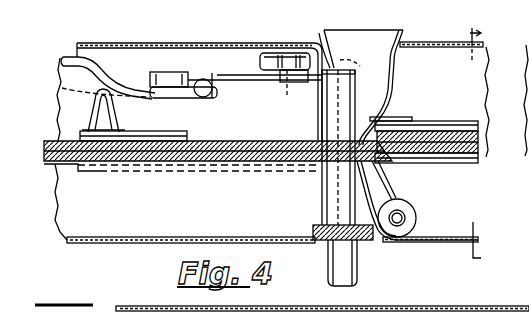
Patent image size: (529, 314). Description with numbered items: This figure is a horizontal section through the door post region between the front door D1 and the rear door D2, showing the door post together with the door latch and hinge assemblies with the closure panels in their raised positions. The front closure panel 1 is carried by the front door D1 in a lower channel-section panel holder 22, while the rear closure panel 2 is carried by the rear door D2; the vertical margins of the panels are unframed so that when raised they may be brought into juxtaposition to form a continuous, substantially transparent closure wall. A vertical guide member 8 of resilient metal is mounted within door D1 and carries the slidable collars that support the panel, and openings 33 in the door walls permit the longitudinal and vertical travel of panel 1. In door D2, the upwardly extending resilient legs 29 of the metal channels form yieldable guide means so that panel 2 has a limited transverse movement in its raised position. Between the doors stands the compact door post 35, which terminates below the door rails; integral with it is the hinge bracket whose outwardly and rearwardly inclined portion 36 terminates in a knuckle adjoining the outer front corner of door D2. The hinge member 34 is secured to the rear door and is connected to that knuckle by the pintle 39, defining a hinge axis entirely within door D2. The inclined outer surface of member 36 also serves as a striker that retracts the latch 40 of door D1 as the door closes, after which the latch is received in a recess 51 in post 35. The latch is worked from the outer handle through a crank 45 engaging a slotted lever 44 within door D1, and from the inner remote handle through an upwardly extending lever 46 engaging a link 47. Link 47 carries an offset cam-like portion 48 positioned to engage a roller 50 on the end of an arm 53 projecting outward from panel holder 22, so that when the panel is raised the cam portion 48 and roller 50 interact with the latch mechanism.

The closure panel 1 is at (265, 141).
The closure panel 2 is at (450, 130).
The vertical guide member 8 is at (485, 141).
The panel holder 22 is at (178, 131).
The channel leg 29 is at (385, 118).
The opening 33 is at (384, 97).
The hinge member 34 is at (417, 219).
The door post 35 is at (358, 158).
The inclined portion 36 is at (387, 193).
The pintle 39 is at (407, 212).
The latch 40 is at (330, 44).
The slotted lever 44 is at (262, 63).
The crank 45 is at (287, 82).
The lever 46 is at (188, 73).
The link 47 is at (173, 97).
The cam-like portion 48 is at (73, 68).
The roller 50 is at (94, 104).
The recess 51 is at (352, 60).
The arm 53 is at (92, 118).
The front door D1 is at (113, 246).
The rear door D2 is at (437, 245).